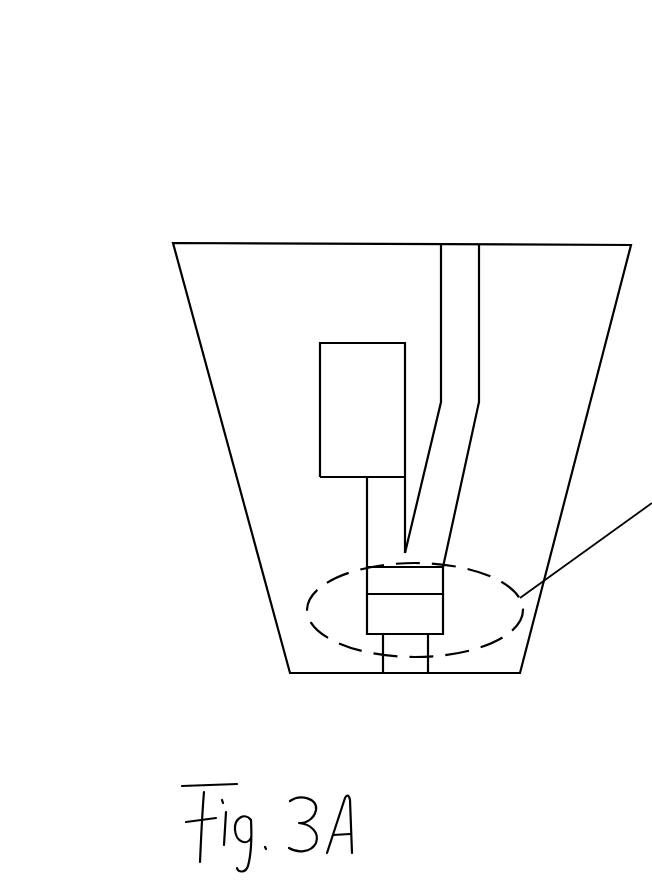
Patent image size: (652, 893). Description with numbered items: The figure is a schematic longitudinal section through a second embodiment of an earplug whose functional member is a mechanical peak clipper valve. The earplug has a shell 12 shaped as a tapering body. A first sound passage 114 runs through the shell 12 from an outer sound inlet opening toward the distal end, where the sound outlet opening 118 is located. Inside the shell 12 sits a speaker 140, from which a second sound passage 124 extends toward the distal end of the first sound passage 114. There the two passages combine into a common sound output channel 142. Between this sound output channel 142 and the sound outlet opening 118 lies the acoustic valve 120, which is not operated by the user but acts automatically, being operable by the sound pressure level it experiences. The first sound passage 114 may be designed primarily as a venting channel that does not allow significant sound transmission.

The shell 12 is at (200, 347).
The first sound passage 114 is at (462, 303).
The speaker 140 is at (327, 391).
The second sound passage 124 is at (383, 507).
The common sound output channel 142 is at (347, 575).
The valve 120 is at (355, 608).
The sound outlet opening 118 is at (472, 645).